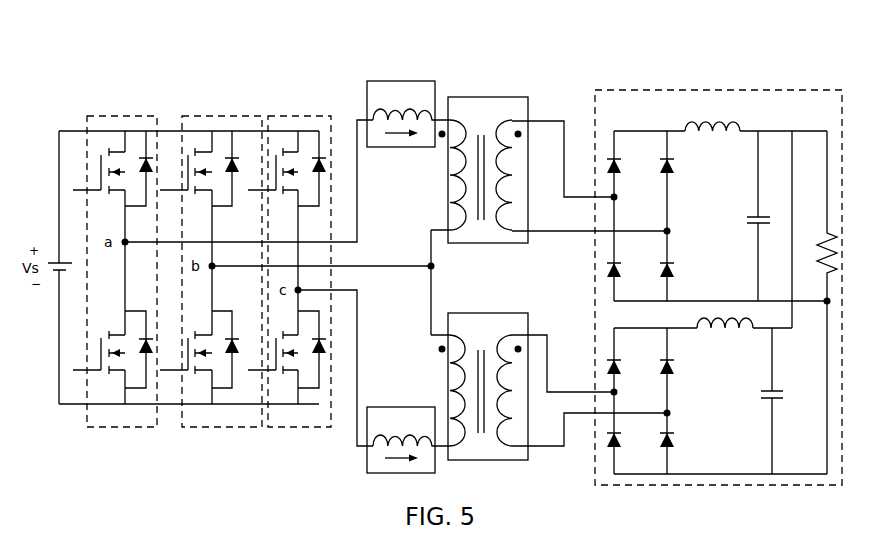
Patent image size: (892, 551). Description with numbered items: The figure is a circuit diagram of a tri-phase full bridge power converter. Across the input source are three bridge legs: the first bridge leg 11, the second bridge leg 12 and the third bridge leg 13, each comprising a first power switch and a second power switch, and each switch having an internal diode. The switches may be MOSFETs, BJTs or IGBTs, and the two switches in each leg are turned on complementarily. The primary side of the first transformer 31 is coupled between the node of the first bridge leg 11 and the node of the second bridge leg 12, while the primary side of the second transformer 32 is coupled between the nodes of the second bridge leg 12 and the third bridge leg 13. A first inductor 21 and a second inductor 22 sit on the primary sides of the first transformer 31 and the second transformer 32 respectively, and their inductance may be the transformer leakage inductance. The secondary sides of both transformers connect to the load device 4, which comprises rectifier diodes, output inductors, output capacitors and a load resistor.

The first bridge leg 11 is at (115, 116).
The second bridge leg 12 is at (218, 116).
The third bridge leg 13 is at (297, 116).
The first inductor 21 is at (394, 81).
The second inductor 22 is at (394, 407).
The first transformer 31 is at (485, 97).
The second transformer 32 is at (485, 313).
The load device 4 is at (716, 90).